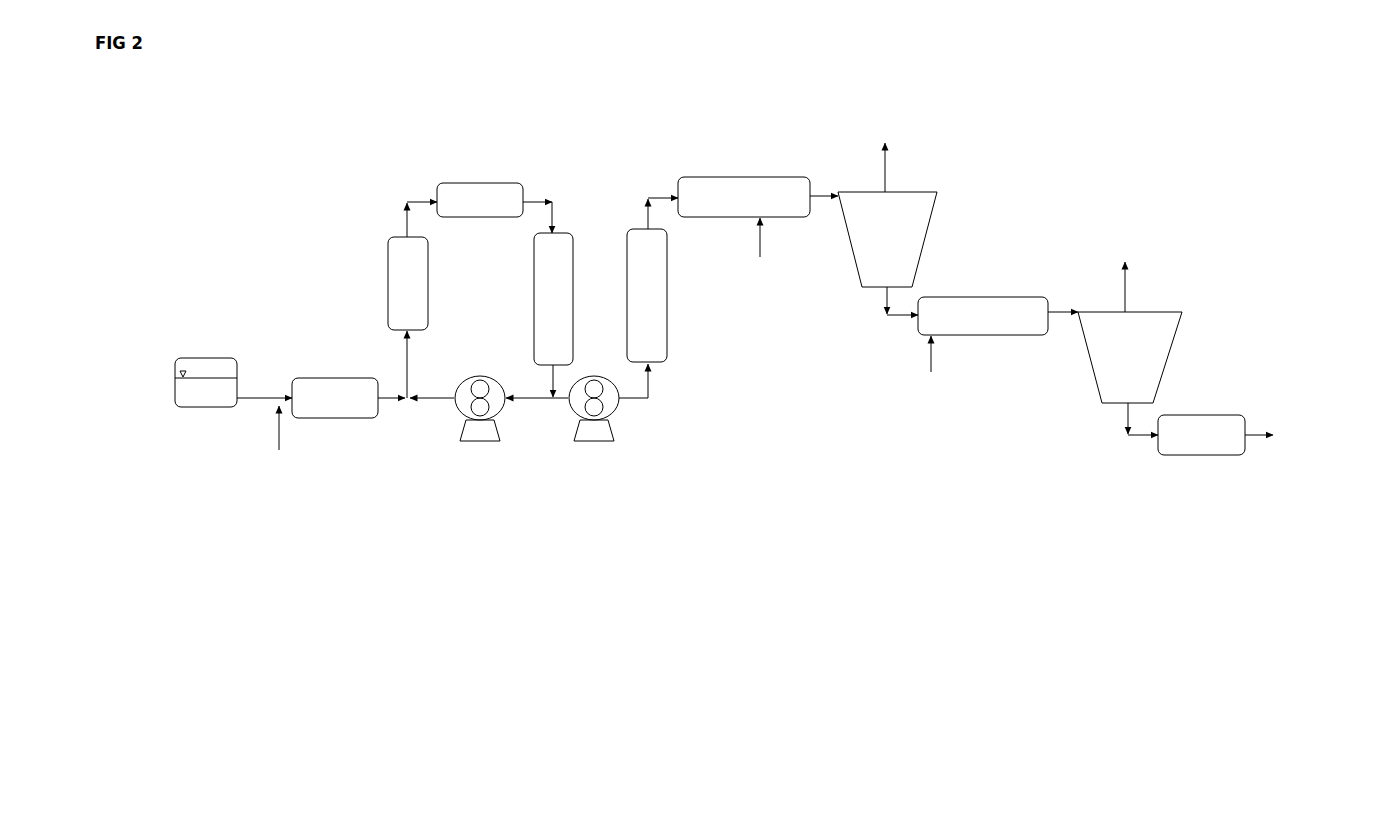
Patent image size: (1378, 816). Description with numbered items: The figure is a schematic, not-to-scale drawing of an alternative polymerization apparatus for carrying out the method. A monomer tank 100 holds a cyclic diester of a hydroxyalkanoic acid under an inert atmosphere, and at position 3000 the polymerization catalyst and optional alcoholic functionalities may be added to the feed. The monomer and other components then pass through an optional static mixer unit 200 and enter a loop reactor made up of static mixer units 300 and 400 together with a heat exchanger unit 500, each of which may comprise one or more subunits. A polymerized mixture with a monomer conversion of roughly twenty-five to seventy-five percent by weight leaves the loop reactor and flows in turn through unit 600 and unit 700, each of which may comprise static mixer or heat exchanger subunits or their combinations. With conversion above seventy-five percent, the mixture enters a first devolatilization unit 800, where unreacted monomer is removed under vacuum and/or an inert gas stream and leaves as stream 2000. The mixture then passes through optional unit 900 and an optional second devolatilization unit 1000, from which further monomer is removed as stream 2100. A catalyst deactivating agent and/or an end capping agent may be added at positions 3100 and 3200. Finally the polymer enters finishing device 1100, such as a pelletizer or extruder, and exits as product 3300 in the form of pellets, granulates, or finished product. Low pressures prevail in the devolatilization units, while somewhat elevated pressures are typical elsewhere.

The monomer tank 100 is at (206, 382).
The optional static mixer unit 200 is at (335, 398).
The static mixer unit 300 is at (408, 283).
The static mixer unit 400 is at (480, 200).
The heat exchanger unit 500 is at (553, 299).
The unit 600 is at (647, 295).
The unit 700 is at (744, 197).
The first devolatilization unit 800 is at (887, 239).
The optional unit 900 is at (983, 316).
The second devolatilization unit 1000 is at (1130, 357).
The finishing device 1100 is at (1201, 435).
The stream 2000 is at (882, 139).
The stream 2100 is at (1125, 257).
The position 3000 is at (296, 454).
The position 3100 is at (749, 270).
The position 3200 is at (922, 386).
The product 3300 is at (1300, 437).